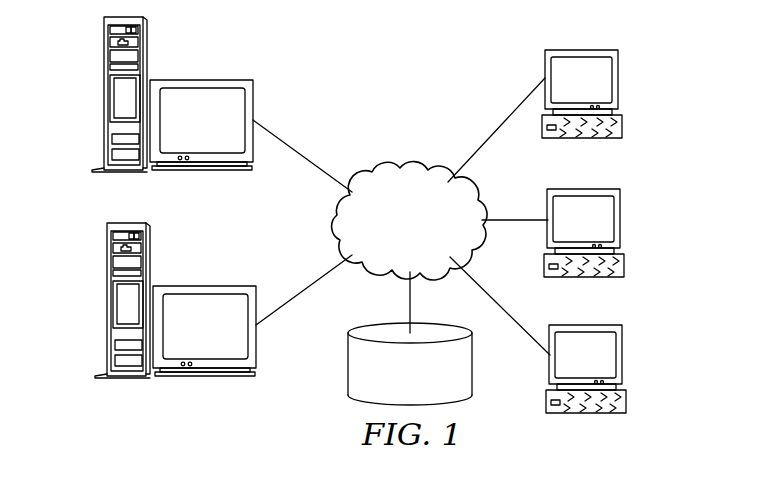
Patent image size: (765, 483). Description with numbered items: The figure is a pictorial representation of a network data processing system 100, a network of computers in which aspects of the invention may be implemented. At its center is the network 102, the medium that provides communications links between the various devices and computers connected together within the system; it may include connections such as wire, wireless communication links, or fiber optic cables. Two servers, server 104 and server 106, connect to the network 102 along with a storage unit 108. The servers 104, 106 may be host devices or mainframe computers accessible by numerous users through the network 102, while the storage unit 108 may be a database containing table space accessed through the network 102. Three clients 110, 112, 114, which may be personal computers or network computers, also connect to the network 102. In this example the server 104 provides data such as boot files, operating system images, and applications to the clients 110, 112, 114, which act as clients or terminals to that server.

The network data processing system 100 is at (458, 59).
The network 102 is at (382, 173).
The server 104 is at (107, 97).
The server 106 is at (108, 300).
The storage unit 108 is at (348, 372).
The client 110 is at (618, 80).
The client 112 is at (618, 218).
The client 114 is at (620, 353).